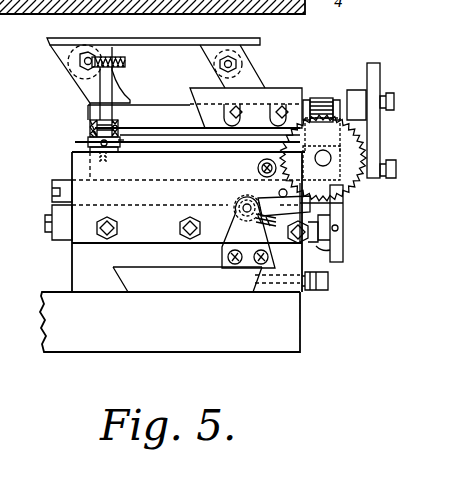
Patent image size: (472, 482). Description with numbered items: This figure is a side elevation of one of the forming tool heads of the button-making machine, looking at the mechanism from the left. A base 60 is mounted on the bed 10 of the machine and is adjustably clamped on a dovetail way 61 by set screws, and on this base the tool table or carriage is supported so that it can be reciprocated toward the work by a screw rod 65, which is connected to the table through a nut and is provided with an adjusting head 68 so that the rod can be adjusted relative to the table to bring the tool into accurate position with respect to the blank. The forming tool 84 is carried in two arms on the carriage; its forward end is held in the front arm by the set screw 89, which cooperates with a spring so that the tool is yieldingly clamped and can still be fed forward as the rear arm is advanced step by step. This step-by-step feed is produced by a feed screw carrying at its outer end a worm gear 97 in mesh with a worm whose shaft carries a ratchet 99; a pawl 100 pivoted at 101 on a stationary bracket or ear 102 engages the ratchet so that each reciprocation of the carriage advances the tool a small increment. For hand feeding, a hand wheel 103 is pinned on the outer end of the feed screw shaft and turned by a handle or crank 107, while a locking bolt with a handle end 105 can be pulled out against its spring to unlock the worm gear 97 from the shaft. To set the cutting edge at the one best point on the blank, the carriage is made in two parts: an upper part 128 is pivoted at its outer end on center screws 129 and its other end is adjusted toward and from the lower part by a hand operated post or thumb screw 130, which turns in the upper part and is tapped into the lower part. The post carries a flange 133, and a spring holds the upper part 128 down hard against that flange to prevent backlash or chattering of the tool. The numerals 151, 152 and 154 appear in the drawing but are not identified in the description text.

The bed 10 is at (263, 345).
The base 60 is at (83, 262).
The dovetail way 61 is at (172, 283).
The screw rod 65 is at (80, 165).
The adjusting head 68 is at (343, 214).
The tool 84 is at (167, 42).
The set screw 89 is at (68, 58).
The worm gear 97 is at (317, 98).
The ratchet 99 is at (340, 175).
The pawl 100 is at (272, 205).
The pivot 101 is at (240, 205).
The stationary bracket 102 is at (252, 239).
The hand wheel 103 is at (372, 63).
The handle end 105 is at (398, 86).
The handle or crank 107 is at (398, 154).
The upper part 128 is at (162, 137).
The center screws 129 is at (262, 161).
The thumb screw 130 is at (102, 80).
The flange 133 is at (121, 143).
The washer 151 is at (92, 135).
The nut 152 is at (90, 150).
The bushing 154 is at (92, 120).